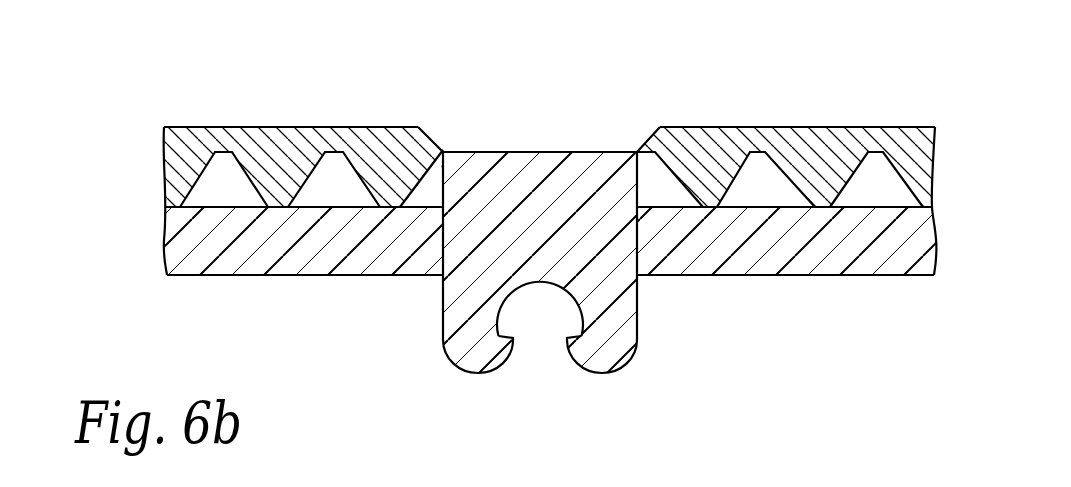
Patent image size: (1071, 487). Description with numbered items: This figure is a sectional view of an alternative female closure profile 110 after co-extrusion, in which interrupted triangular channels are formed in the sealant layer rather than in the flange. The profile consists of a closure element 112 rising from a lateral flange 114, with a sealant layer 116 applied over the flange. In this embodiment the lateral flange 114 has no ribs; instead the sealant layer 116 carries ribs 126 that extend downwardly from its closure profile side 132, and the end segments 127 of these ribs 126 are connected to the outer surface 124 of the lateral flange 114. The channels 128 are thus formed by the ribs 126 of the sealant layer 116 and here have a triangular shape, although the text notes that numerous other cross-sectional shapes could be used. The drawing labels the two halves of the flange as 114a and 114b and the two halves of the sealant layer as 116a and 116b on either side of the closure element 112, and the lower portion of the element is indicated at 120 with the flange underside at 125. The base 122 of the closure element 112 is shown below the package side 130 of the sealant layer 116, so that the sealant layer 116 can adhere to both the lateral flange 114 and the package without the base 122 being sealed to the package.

The female closure profile 110 is at (418, 391).
The closure element 112 is at (432, 300).
The lateral flange 114 is at (140, 230).
The lower layer right portion 114a is at (752, 248).
The lower layer left portion 114b is at (207, 250).
The sealant layer 116 is at (137, 148).
The upper layer right portion 116a is at (827, 135).
The upper layer left portion 116b is at (295, 150).
The lobes 120 is at (635, 341).
The base 122 is at (553, 152).
The outer surface 124 is at (268, 178).
The bottom surface 125 is at (255, 275).
The ribs 126 is at (177, 150).
The end segments 127 is at (393, 200).
The channels 128 is at (227, 172).
The package side 130 is at (418, 127).
The closure profile side 132 is at (332, 143).